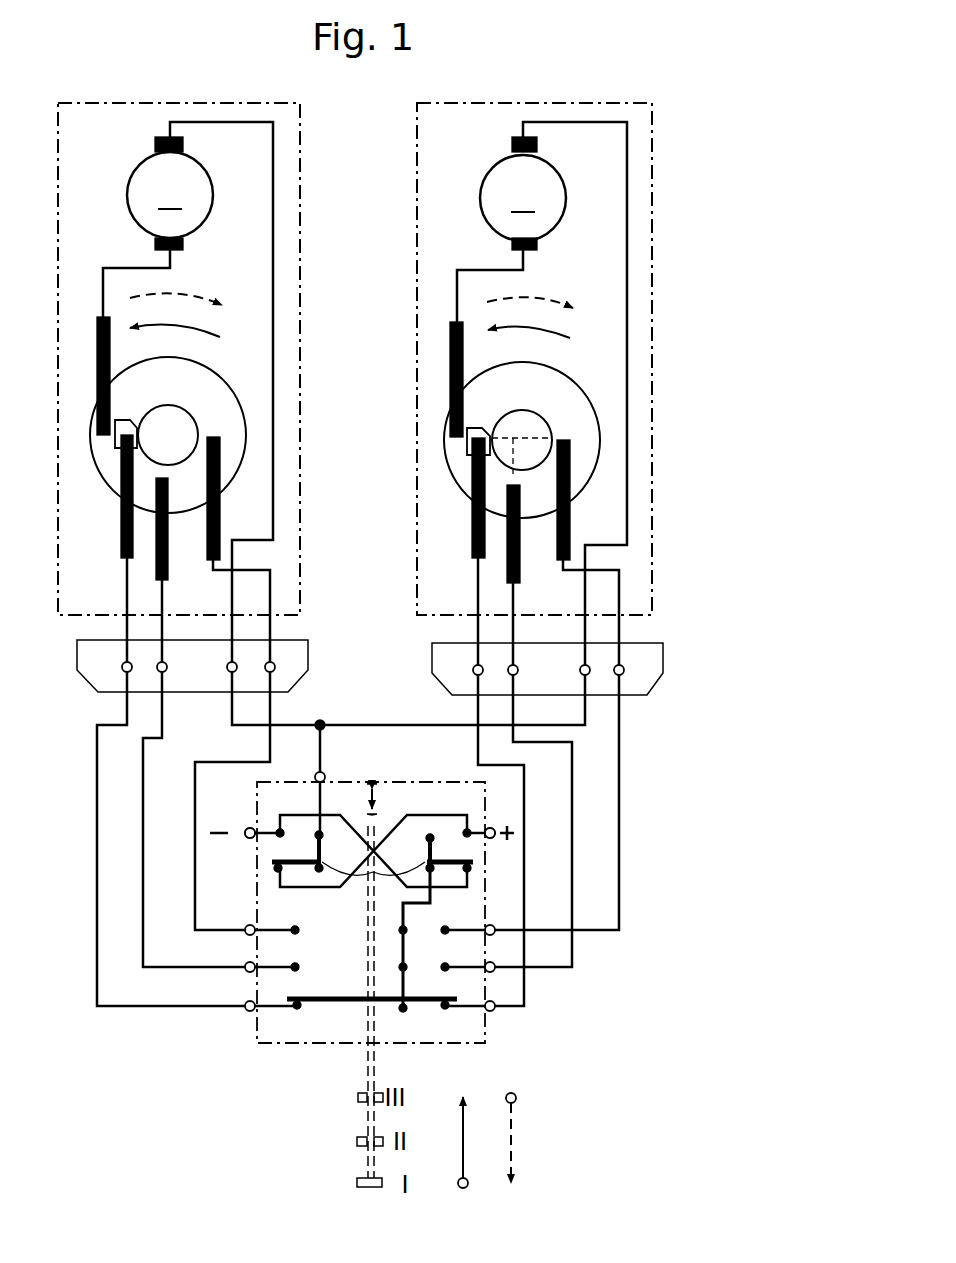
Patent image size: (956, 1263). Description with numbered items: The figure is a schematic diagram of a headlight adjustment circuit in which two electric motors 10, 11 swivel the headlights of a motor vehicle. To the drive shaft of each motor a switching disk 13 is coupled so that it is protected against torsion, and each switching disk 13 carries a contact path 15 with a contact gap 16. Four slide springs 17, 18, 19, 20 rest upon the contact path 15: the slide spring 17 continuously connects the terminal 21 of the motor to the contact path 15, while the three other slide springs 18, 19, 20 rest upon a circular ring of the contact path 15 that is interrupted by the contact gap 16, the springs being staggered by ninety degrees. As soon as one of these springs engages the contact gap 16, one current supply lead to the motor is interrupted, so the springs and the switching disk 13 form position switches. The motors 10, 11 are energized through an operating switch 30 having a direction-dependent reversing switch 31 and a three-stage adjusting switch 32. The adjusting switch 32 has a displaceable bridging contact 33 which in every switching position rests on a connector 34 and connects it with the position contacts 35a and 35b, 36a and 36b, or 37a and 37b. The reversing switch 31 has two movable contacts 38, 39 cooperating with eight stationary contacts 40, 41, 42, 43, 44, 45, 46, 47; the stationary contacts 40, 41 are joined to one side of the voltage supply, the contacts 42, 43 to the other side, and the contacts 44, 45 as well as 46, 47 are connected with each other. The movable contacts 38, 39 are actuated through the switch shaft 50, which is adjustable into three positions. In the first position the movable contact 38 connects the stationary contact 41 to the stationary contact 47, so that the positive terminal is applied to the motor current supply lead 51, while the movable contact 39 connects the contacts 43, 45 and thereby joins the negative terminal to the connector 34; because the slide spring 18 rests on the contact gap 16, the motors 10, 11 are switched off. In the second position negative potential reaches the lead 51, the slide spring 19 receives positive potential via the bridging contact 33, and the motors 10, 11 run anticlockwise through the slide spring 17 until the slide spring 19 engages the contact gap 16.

The electric motor 10 is at (207, 200).
The electric motor 11 is at (562, 202).
The switching disk 13 is at (253, 427).
The contact path 15 is at (218, 393).
The contact gap 16 is at (125, 428).
The slide spring 17 is at (97, 346).
The slide spring 18 is at (121, 517).
The slide spring 19 is at (156, 548).
The slide spring 20 is at (207, 545).
The terminal 21 is at (184, 246).
The operating switch 30 is at (502, 868).
The reversing switch 31 is at (383, 795).
The adjusting switch 32 is at (532, 996).
The bridging contact 33 is at (348, 1001).
The connector 34 is at (399, 945).
The position contact 35a is at (490, 1011).
The position contact 35b is at (300, 1009).
The position contact 36a is at (446, 966).
The position contact 36b is at (298, 966).
The position contact 37a is at (446, 928).
The position contact 37b is at (298, 929).
The movable contact 38 is at (305, 857).
The movable contact 39 is at (446, 855).
The stationary contact 40 is at (480, 831).
The stationary contact 41 is at (275, 868).
The stationary contact 42 is at (275, 830).
The stationary contact 43 is at (475, 863).
The stationary contact 44 is at (426, 840).
The stationary contact 45 is at (470, 870).
The stationary contact 46 is at (323, 830).
The stationary contact 47 is at (318, 872).
The switch shaft 50 is at (367, 1070).
The motor current supply lead 51 is at (340, 724).